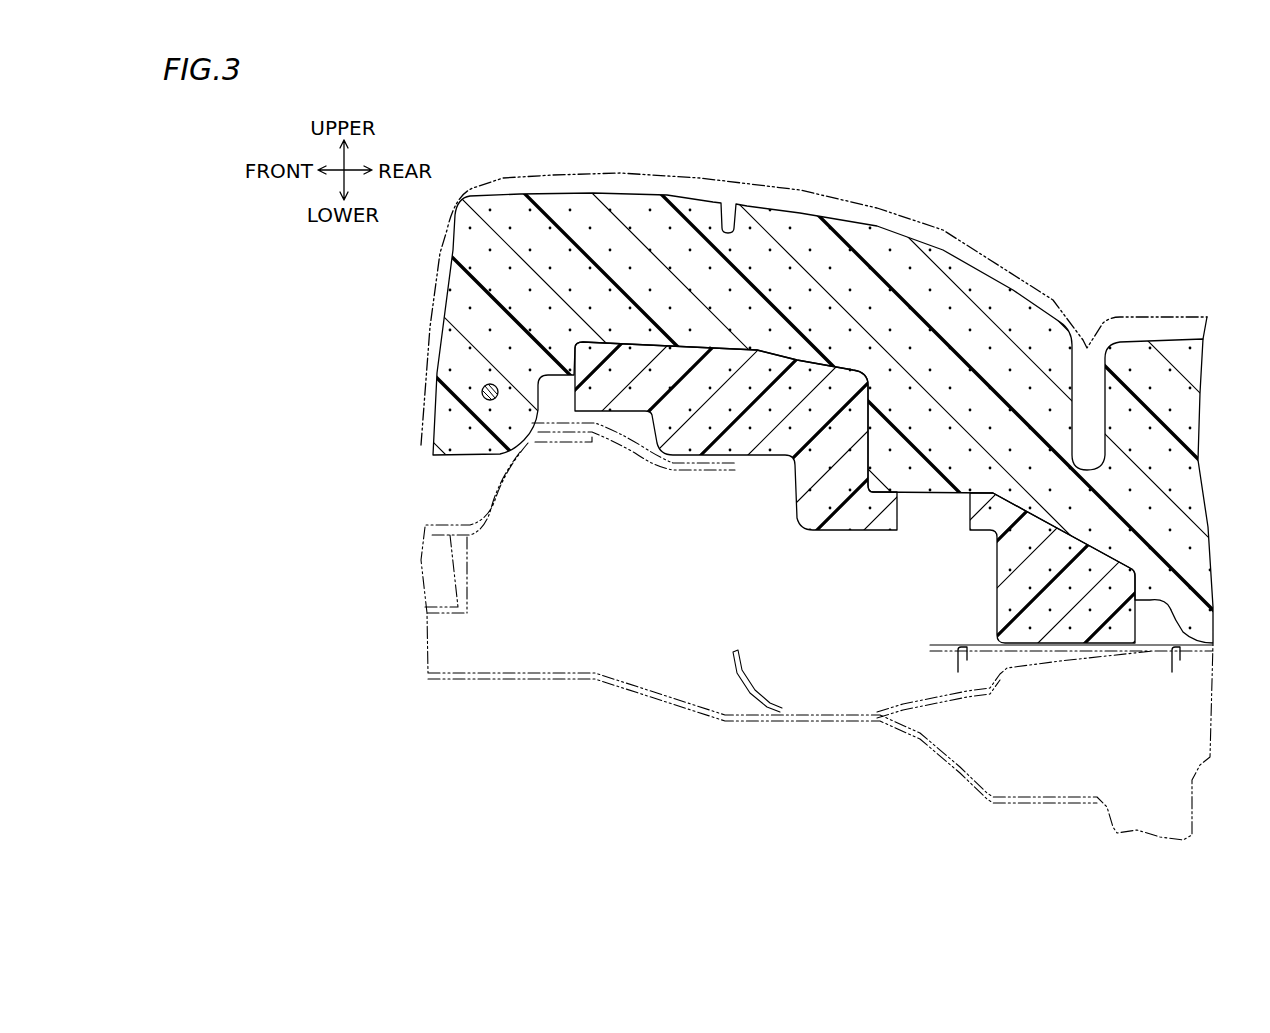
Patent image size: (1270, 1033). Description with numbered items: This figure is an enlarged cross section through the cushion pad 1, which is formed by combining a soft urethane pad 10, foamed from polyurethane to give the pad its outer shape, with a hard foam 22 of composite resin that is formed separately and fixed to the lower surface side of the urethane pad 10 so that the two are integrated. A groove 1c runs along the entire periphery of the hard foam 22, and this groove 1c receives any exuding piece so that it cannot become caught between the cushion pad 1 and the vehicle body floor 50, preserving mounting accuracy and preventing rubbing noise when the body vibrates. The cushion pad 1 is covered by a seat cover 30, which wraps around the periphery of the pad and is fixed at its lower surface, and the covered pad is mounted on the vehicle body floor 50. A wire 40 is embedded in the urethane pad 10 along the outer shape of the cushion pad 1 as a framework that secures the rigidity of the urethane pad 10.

The cushion pad 1 is at (1100, 191).
The groove 1c is at (558, 377).
The urethane pad 10 is at (880, 224).
The hard foam 22 is at (800, 502).
The seat cover 30 is at (649, 182).
The wire 40 is at (482, 390).
The vehicle body floor 50 is at (640, 690).